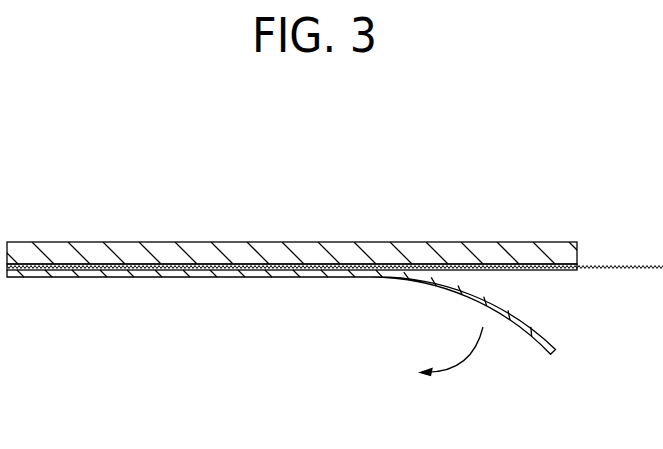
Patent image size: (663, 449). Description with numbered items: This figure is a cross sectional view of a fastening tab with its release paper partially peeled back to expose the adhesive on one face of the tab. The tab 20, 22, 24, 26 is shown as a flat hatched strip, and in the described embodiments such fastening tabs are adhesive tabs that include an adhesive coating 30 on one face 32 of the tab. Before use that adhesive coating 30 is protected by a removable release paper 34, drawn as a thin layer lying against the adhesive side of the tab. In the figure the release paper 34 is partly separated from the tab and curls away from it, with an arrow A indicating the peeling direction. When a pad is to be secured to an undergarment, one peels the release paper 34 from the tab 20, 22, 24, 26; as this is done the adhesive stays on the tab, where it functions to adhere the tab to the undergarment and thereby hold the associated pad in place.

The tab 20 is at (295, 207).
The tab 22 is at (295, 207).
The tab 24 is at (295, 207).
The tab 26 is at (295, 178).
The adhesive coating 30 is at (331, 259).
The face 32 is at (522, 272).
The release paper 34 is at (112, 277).
The peeling direction A is at (462, 362).